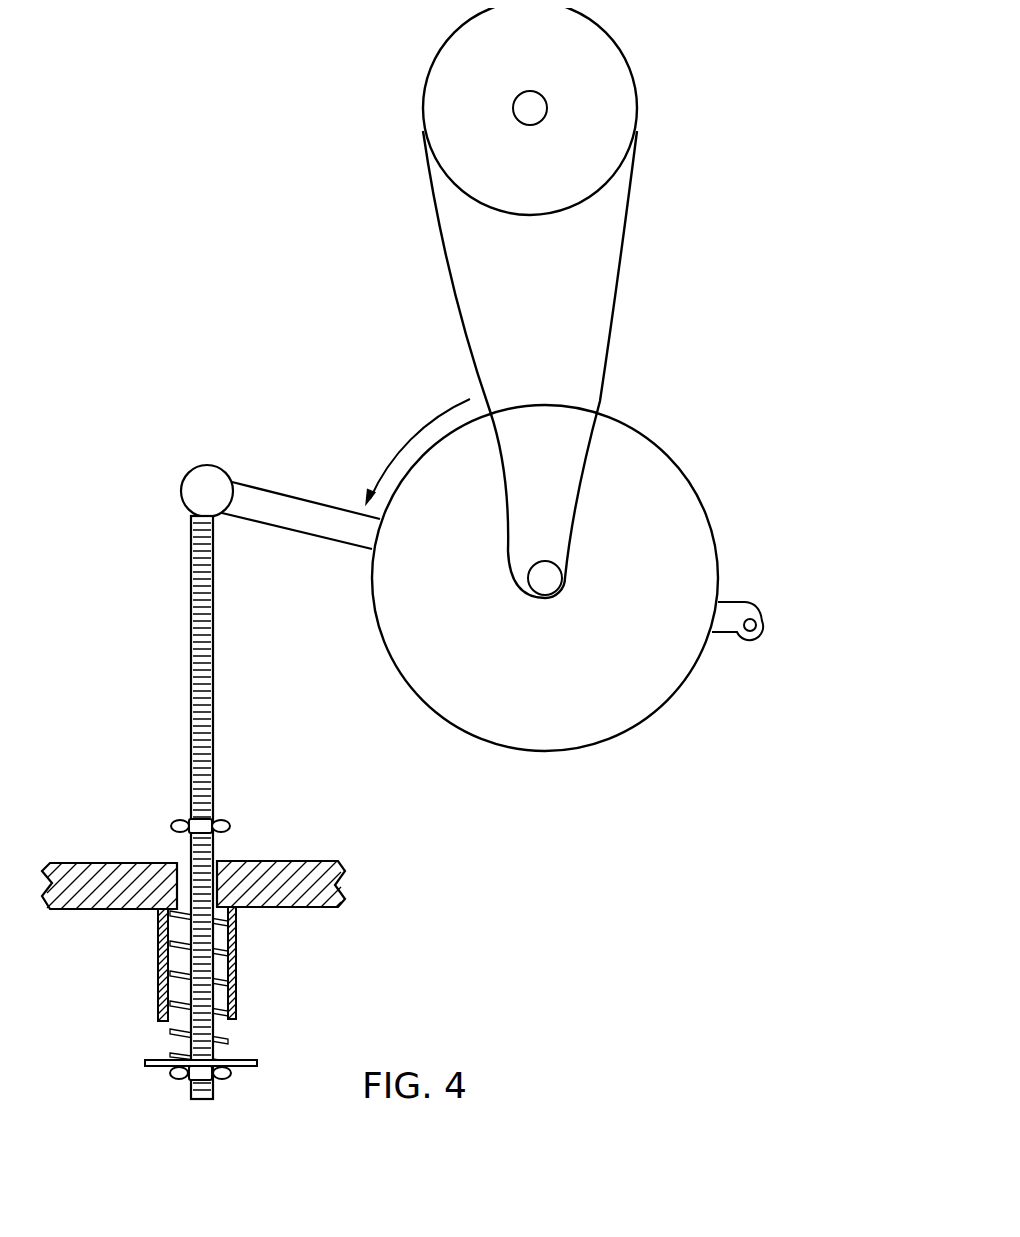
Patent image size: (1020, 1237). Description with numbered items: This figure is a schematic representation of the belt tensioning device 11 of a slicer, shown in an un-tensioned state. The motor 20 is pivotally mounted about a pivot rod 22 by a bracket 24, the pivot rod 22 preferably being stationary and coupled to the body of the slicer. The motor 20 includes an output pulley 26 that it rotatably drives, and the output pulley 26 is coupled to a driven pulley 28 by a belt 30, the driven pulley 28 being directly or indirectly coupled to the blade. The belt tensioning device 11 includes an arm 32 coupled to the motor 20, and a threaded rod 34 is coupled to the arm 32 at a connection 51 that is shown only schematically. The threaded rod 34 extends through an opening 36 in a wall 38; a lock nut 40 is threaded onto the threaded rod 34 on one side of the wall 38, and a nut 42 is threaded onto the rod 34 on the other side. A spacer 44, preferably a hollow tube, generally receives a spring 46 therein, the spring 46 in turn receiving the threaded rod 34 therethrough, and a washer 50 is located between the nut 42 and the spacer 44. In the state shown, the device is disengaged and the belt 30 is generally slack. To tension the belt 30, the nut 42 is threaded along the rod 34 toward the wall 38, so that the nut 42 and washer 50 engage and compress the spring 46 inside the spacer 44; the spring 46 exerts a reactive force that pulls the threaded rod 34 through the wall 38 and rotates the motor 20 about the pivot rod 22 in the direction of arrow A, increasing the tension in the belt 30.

The belt tensioning device 11 is at (150, 803).
The motor 20 is at (580, 735).
The pivot rod 22 is at (750, 622).
The bracket 24 is at (723, 634).
The output pulley 26 is at (551, 577).
The driven pulley 28 is at (626, 85).
The belt 30 is at (612, 318).
The arm 32 is at (275, 493).
The threaded rod 34 is at (193, 614).
The opening 36 is at (186, 876).
The wall 38 is at (70, 910).
The lock nut 40 is at (233, 823).
The nut 42 is at (174, 1073).
The spacer 44 is at (233, 956).
The spring 46 is at (230, 1035).
The washer 50 is at (255, 1058).
The connection 51 is at (205, 464).
The arrow A is at (404, 444).